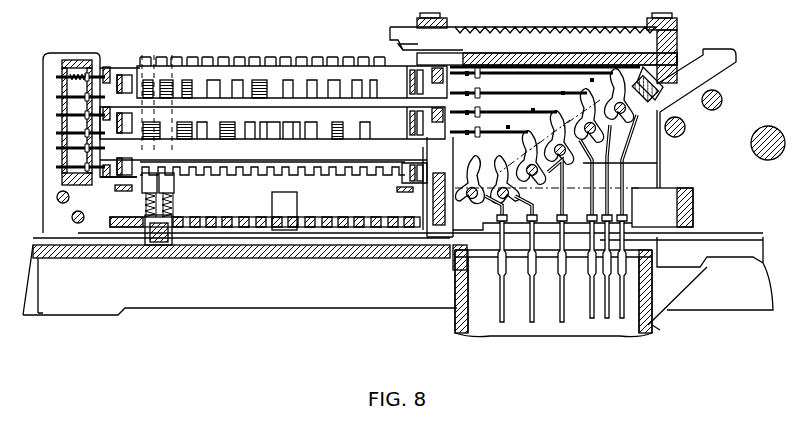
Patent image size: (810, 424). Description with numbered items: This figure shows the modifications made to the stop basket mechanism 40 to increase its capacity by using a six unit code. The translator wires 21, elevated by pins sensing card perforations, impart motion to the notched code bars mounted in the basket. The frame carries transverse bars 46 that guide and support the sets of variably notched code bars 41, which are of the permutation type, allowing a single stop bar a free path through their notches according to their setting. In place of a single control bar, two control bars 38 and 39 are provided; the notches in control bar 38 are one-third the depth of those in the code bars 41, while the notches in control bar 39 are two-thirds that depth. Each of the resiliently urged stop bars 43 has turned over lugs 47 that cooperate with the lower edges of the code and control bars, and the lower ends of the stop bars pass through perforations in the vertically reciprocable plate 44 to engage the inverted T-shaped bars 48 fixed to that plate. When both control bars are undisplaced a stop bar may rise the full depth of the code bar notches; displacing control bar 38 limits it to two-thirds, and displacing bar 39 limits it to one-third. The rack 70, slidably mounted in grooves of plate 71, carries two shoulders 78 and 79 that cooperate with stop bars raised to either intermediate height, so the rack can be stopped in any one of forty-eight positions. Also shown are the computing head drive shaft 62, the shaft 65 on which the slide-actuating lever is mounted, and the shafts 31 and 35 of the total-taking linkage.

The stop basket mechanism 40 is at (183, 29).
The variably notched code bars 41 is at (108, 108).
The stop bars 43 is at (298, 60).
The rack 70 is at (391, 34).
The shoulder 78 is at (400, 45).
The shoulder 79 is at (405, 52).
The plate 71 is at (678, 65).
The shaft 65 is at (720, 98).
The shaft 35 is at (686, 127).
The computing head drive shaft 62 is at (763, 164).
The transverse bars 46 is at (408, 163).
The control bar 38 is at (238, 160).
The control bar 39 is at (352, 177).
The vertically reciprocable plate 44 is at (376, 218).
The turned over lugs 47 is at (138, 187).
The shaft 31 is at (71, 217).
The inverted T-shaped bars 48 is at (157, 243).
The translator wires 21 is at (622, 319).